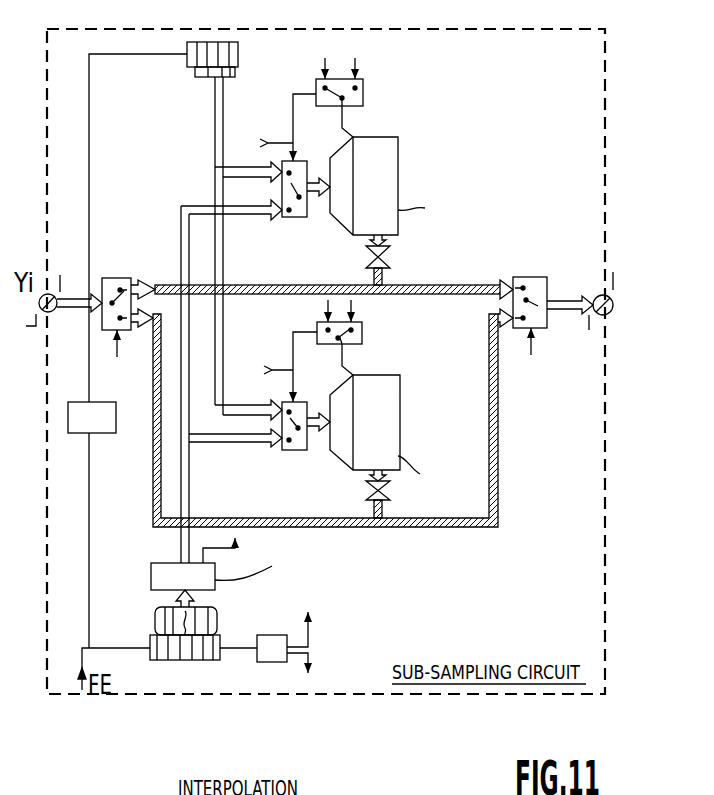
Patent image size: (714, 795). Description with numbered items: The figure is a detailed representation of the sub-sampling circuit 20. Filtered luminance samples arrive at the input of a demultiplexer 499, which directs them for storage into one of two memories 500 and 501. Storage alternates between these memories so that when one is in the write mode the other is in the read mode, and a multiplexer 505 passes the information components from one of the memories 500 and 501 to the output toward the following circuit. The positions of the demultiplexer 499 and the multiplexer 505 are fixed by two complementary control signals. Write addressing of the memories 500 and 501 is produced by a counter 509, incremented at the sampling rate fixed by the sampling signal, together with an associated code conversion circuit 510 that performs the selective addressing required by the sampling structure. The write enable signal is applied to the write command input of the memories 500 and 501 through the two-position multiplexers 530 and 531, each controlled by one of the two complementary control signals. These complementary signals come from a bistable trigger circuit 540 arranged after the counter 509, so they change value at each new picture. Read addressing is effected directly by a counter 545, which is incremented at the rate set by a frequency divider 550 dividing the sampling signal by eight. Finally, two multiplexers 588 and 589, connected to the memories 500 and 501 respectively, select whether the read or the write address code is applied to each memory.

The counter 545 is at (238, 57).
The two-position multiplexer 530 is at (363, 96).
The memory 500 is at (390, 168).
The multiplexer 588 is at (286, 182).
The demultiplexer 499 is at (120, 278).
The multiplexer 505 is at (533, 277).
The two-position multiplexer 531 is at (362, 338).
The memory 501 is at (390, 438).
The multiplexer 589 is at (281, 422).
The frequency divider 550 is at (116, 420).
The code conversion circuit 510 is at (151, 577).
The counter 509 is at (187, 660).
The bistable trigger circuit 540 is at (280, 662).
The sub-sampling circuit 20 is at (577, 588).